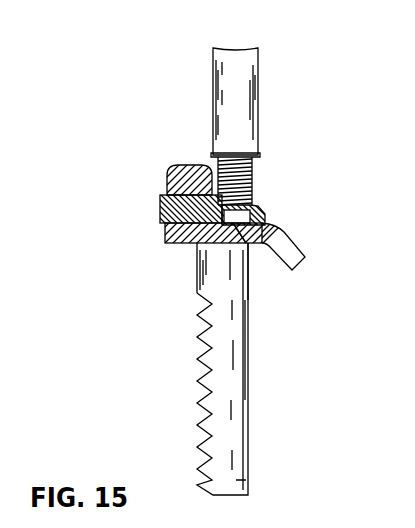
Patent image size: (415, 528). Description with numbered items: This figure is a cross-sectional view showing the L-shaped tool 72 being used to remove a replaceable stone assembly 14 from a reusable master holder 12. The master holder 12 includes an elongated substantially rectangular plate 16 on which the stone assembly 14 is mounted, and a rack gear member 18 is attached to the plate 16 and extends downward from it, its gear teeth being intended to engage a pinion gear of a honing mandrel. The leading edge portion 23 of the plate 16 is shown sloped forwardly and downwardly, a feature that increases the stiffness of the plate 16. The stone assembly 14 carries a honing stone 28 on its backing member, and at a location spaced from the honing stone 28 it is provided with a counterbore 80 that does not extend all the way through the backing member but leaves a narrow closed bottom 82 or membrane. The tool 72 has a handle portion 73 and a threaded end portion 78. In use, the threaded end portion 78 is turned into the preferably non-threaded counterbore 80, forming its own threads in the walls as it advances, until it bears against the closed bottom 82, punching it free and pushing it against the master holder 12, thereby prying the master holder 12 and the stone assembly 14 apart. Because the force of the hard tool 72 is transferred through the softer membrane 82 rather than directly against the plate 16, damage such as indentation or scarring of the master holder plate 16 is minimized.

The tool 72 is at (259, 79).
The handle portion 73 is at (258, 110).
The threaded end portion 78 is at (252, 175).
The honing stone 28 is at (167, 172).
The replaceable stone assembly 14 is at (160, 209).
The counterbore 80 is at (265, 212).
The plate 16 is at (165, 235).
The leading edge portion 23 is at (295, 241).
The closed bottom 82 is at (250, 246).
The master holder 12 is at (185, 247).
The rack gear member 18 is at (238, 402).